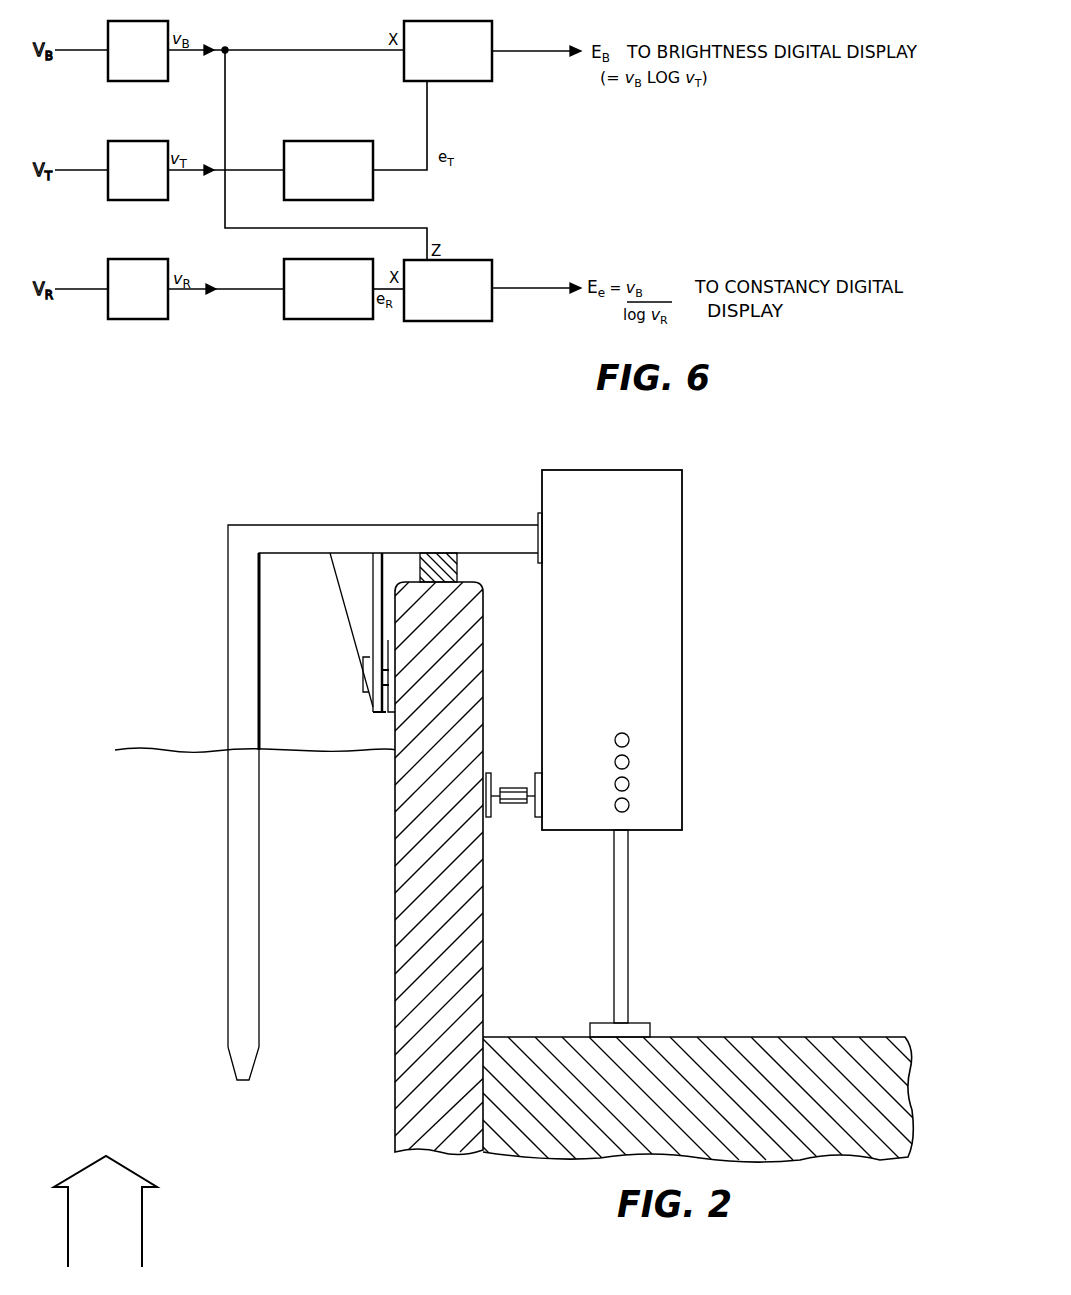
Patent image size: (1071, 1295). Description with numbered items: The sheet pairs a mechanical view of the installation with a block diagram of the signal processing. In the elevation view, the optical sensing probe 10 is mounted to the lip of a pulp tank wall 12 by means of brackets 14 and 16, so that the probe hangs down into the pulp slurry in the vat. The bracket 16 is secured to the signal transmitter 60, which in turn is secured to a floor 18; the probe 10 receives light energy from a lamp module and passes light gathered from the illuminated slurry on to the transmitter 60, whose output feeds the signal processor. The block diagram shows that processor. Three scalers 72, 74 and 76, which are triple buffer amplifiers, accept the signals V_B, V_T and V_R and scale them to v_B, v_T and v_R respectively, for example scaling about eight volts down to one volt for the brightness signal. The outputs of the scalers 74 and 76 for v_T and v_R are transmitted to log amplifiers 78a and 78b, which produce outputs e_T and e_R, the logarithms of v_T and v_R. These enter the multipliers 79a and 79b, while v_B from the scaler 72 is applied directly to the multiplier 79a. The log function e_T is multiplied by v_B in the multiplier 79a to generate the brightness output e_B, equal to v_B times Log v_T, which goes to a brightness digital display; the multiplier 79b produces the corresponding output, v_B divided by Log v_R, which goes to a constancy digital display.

In FIG. 2, the optical sensing probe 10 is at (218, 739).
In FIG. 2, the pulp tank wall 12 is at (451, 926).
In FIG. 2, the bracket 14 is at (349, 619).
In FIG. 2, the bracket 16 is at (512, 787).
In FIG. 2, the floor 18 is at (705, 1098).
In FIG. 2, the signal transmitter 60 is at (627, 620).
In FIG. 6, the scaler 72 is at (152, 62).
In FIG. 6, the scaler 74 is at (152, 182).
In FIG. 6, the scaler 76 is at (152, 301).
In FIG. 6, the log amplifier 78a is at (348, 182).
In FIG. 6, the log amplifier 78b is at (348, 301).
In FIG. 6, the multiplier 79a is at (466, 62).
In FIG. 6, the multiplier 79b is at (466, 302).